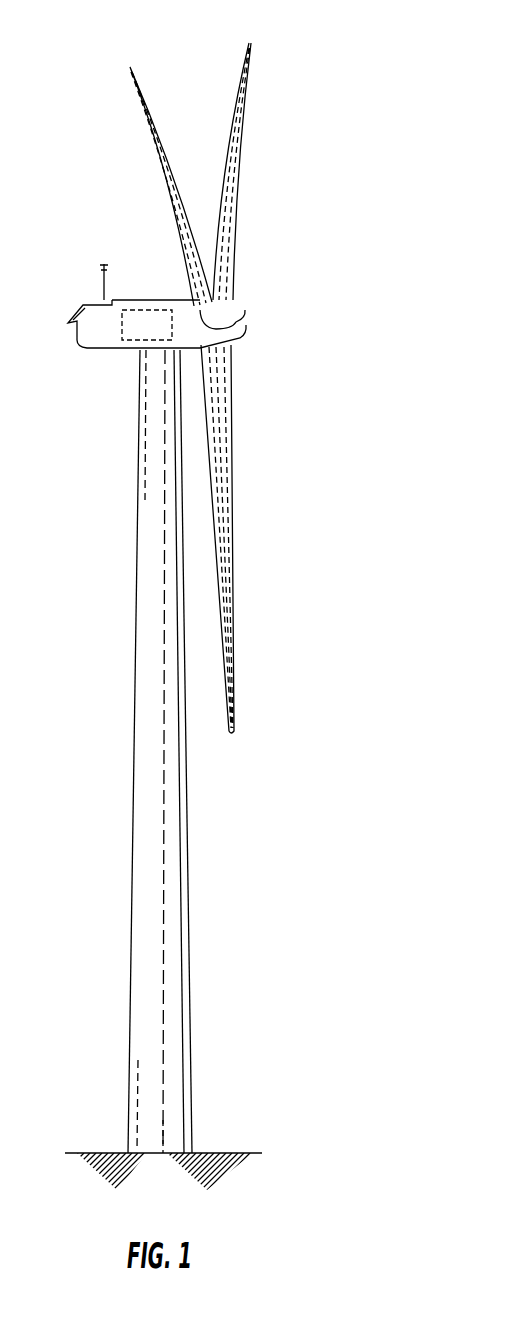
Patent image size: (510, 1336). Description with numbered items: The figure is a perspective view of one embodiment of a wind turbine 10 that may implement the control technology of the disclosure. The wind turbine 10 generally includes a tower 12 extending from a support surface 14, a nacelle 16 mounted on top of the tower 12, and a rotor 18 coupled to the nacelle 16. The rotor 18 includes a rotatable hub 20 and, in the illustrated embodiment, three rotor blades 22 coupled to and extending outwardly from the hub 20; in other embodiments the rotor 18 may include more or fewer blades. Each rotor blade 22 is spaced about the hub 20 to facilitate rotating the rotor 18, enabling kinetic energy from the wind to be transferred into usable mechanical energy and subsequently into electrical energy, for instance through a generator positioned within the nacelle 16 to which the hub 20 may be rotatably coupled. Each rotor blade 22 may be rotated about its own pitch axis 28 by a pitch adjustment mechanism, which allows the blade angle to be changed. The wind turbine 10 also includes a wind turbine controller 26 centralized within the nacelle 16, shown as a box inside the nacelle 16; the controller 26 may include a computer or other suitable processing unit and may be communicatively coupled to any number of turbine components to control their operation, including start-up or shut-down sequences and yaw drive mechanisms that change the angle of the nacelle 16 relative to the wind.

The wind turbine 10 is at (351, 164).
The tower 12 is at (168, 818).
The support surface 14 is at (107, 1153).
The nacelle 16 is at (112, 352).
The rotor 18 is at (255, 300).
The rotatable hub 20 is at (248, 320).
The rotor blade 22 is at (245, 62).
The wind turbine controller 26 is at (140, 308).
The pitch axis 28 is at (170, 202).